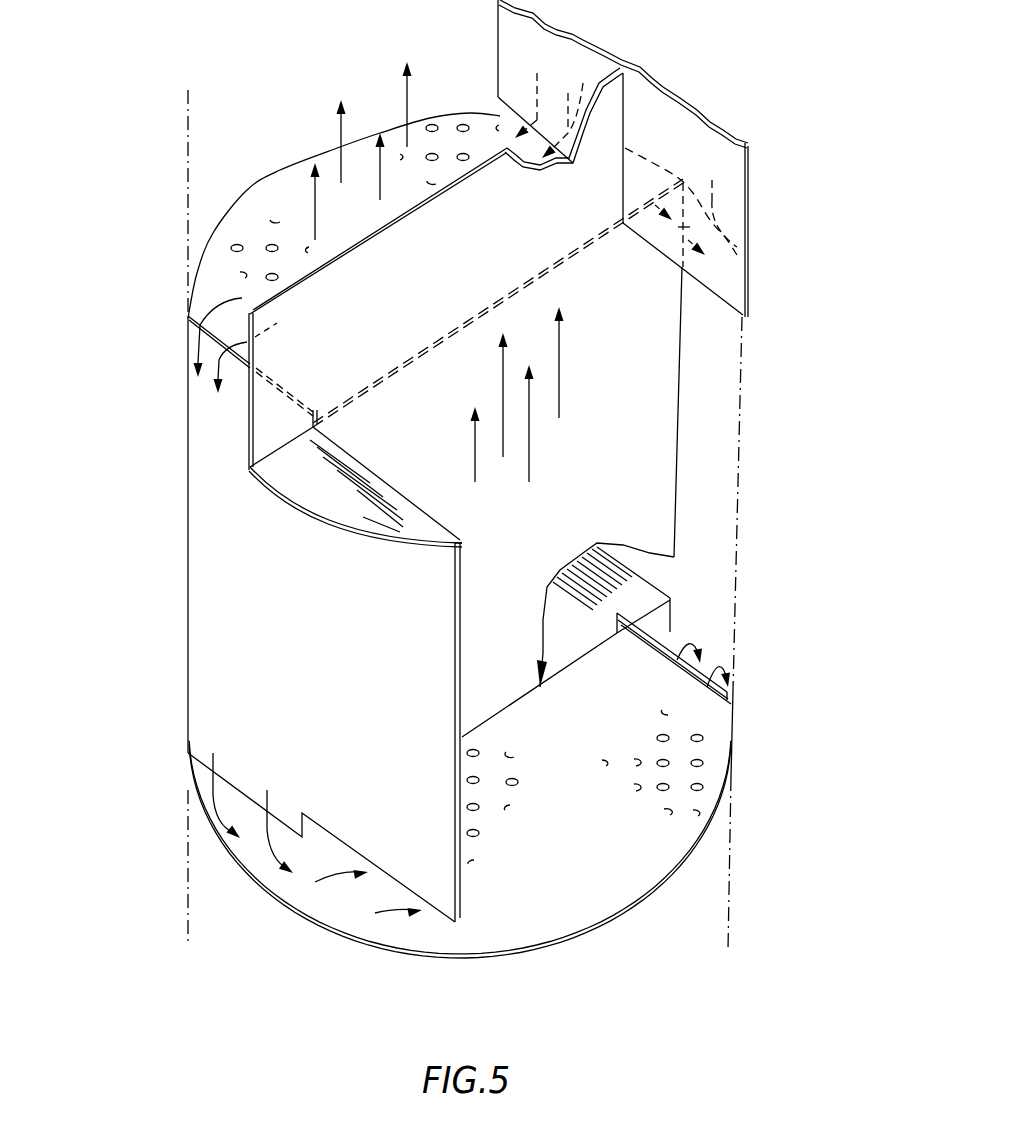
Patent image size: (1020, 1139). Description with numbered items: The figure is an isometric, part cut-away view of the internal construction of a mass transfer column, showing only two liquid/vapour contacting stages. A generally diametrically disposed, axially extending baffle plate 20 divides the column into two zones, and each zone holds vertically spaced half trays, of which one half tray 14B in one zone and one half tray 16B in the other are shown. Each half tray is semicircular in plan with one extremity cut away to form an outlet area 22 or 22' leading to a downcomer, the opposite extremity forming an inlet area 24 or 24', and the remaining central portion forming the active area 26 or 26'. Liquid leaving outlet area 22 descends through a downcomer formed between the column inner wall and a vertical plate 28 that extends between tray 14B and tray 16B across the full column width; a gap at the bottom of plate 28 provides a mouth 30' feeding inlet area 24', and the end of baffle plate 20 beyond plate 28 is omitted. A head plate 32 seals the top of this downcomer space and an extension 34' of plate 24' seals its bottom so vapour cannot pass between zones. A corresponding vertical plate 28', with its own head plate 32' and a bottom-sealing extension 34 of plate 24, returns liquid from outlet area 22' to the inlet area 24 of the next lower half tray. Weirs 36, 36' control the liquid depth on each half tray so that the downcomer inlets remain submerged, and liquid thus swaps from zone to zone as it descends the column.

The half tray 14B is at (276, 180).
The half tray 16B is at (632, 890).
The baffle plate 20 is at (460, 289).
The outlet area 22 is at (297, 672).
The outlet area 22' is at (629, 522).
The inlet area 24 is at (564, 114).
The inlet area 24' is at (321, 918).
The active area 26 is at (365, 203).
The active area 26' is at (585, 787).
The vertical plate 28 is at (177, 517).
The vertical plate 28' is at (652, 475).
The mouth (inlet) 30' is at (378, 939).
The head plate 32 is at (355, 496).
The head plate 32' is at (675, 587).
The extension 34 is at (729, 233).
The extension 34' is at (249, 849).
The weir 36 is at (230, 359).
The weir 36' is at (712, 658).